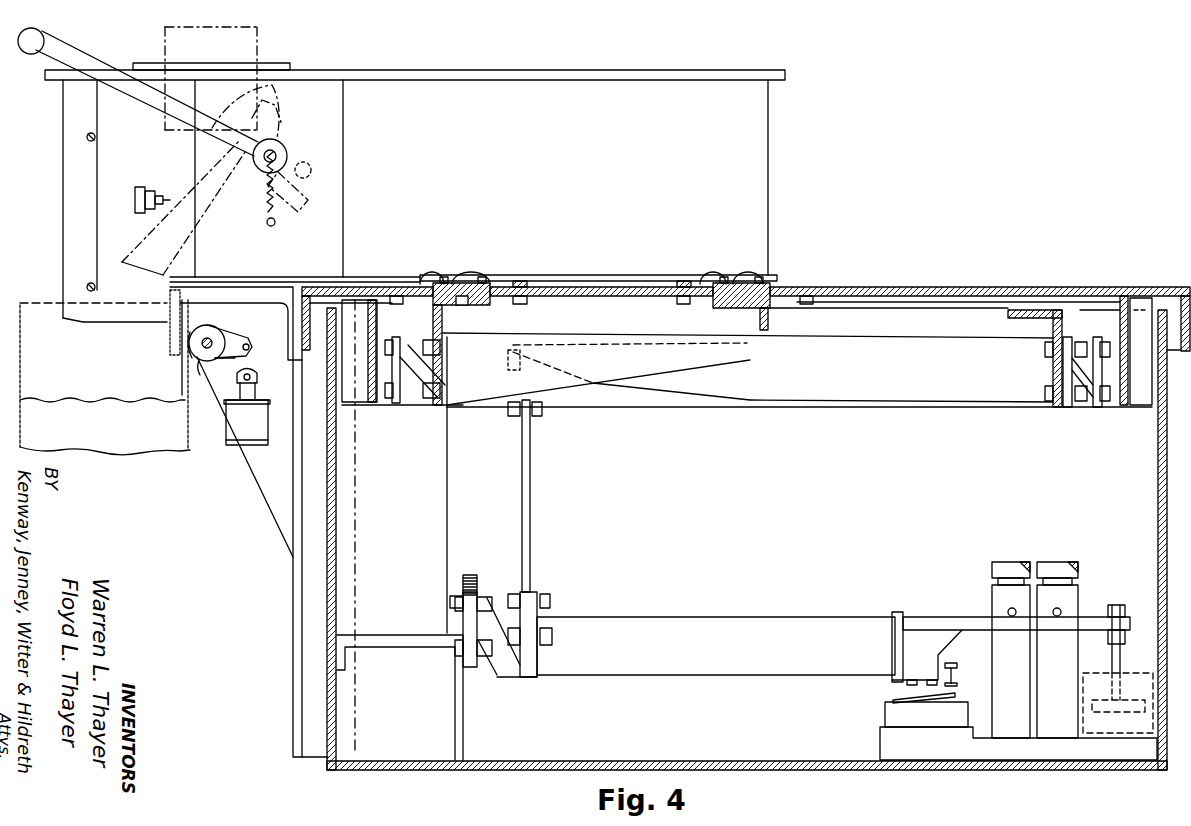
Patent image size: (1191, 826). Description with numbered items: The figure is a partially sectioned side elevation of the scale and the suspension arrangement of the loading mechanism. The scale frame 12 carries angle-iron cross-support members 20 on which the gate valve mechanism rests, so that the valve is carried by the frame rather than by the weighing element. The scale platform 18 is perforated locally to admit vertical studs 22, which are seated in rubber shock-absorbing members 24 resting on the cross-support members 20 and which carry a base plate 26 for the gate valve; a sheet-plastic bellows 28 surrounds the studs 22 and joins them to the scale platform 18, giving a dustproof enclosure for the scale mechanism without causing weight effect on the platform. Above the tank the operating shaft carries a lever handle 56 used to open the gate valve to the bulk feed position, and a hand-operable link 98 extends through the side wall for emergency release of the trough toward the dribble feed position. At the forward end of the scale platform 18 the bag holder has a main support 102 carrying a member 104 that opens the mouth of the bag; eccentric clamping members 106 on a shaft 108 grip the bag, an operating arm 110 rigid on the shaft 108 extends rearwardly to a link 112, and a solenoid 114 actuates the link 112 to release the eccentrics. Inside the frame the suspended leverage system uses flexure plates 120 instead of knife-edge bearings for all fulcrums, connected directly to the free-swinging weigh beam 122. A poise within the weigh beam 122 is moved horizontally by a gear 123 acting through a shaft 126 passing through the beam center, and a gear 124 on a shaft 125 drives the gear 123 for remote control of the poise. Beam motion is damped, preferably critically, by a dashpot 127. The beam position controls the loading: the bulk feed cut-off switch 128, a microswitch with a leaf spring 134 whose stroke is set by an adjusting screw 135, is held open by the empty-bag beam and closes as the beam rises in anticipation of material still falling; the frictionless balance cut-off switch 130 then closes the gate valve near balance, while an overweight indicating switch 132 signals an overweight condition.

The scale frame 12 is at (327, 603).
The scale platform 18 is at (878, 290).
The angle-iron cross-support members 20 is at (490, 305).
The vertical studs 22 is at (478, 270).
The rubber shock-absorbing members 24 is at (420, 288).
The base plate 26 is at (578, 276).
The bellows 28 is at (513, 283).
The lever handle 56 is at (84, 52).
The link 98 is at (138, 211).
The main support 102 is at (293, 318).
The member for opening the mouth of the bag 104 is at (42, 285).
The eccentric clamping members 106 is at (205, 362).
The shaft 108 is at (199, 345).
The operating arm 110 is at (240, 352).
The link 112 is at (261, 378).
The solenoid 114 is at (228, 440).
The flexure plates 120 is at (752, 365).
The weigh beam 122 is at (724, 690).
The gear 123 is at (470, 666).
The gear 124 is at (472, 576).
The shaft 125 is at (460, 597).
The shaft 126 is at (506, 674).
The dashpot 127 is at (1129, 731).
The bulk feed cut-off switch 128 is at (884, 714).
The balance cut-off switch 130 is at (1010, 562).
The overweight indicating switch 132 is at (1058, 562).
The leaf spring 134 is at (952, 700).
The adjusting screw 135 is at (952, 666).